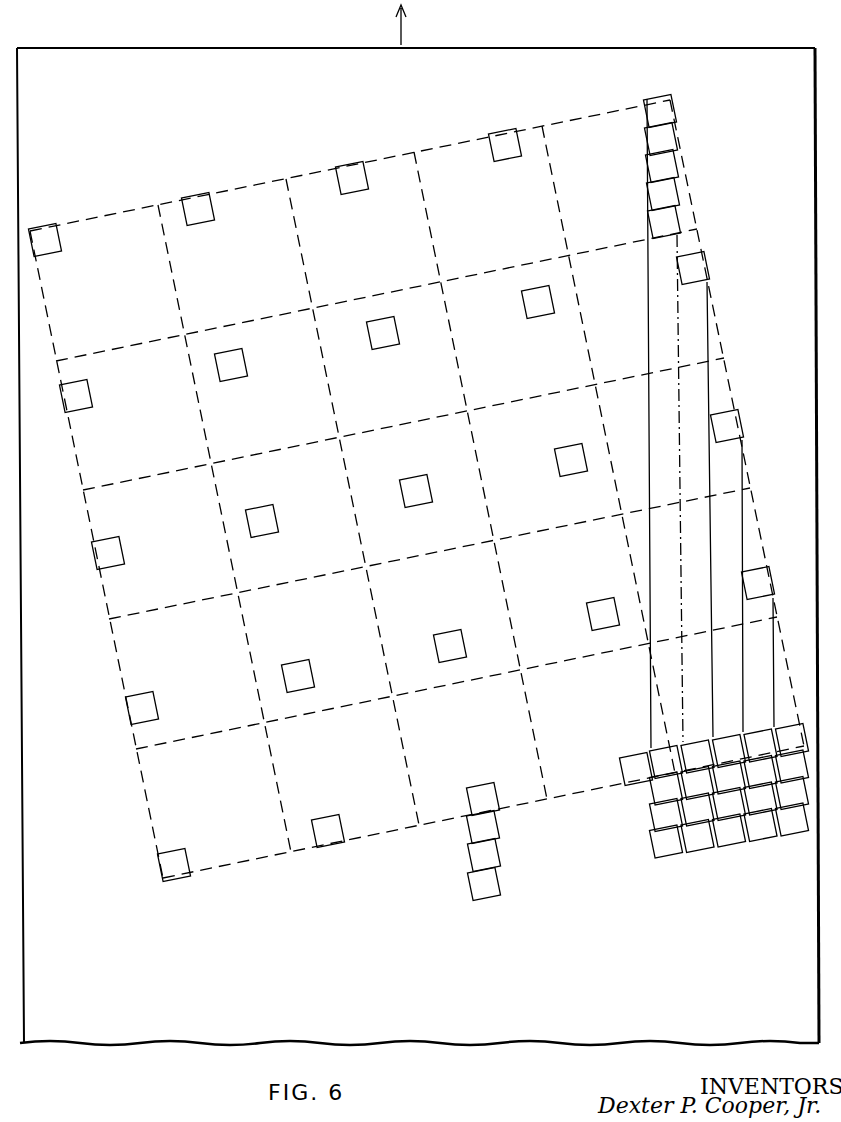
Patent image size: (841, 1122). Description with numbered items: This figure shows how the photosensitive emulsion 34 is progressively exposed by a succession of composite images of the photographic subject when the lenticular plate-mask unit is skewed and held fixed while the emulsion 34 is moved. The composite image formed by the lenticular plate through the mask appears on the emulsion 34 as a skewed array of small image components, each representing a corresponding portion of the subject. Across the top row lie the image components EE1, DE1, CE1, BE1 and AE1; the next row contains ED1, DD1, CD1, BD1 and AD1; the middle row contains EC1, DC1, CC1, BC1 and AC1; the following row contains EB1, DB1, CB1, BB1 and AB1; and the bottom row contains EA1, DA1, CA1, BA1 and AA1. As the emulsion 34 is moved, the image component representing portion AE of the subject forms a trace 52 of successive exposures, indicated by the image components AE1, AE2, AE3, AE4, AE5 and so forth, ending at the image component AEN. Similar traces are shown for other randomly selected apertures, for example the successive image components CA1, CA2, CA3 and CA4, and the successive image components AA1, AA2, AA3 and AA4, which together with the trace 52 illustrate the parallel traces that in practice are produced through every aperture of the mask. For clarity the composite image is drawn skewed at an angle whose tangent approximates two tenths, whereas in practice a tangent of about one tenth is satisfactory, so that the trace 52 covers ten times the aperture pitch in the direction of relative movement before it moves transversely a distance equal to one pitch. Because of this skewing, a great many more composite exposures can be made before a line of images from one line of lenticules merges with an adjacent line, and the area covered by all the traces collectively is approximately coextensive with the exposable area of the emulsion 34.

The trace of successive exposures 52 is at (650, 326).
The emulsion 34 is at (486, 1025).
The image component EE1 is at (50, 240).
The image component DE1 is at (203, 209).
The image component CE1 is at (357, 178).
The image component BE1 is at (515, 152).
The image component AE1 is at (665, 111).
The image component AE2 is at (663, 141).
The image component AE3 is at (668, 170).
The image component AE4 is at (662, 198).
The image component AE5 is at (668, 225).
The image component AD1 is at (698, 268).
The image component CD1 is at (388, 333).
The image component BD1 is at (540, 312).
The image component DD1 is at (236, 365).
The image component ED1 is at (81, 396).
The image component AC1 is at (732, 426).
The image component BC1 is at (572, 470).
The image component CC1 is at (421, 491).
The image component DC1 is at (267, 521).
The image component EC1 is at (113, 553).
The image component AB1 is at (763, 583).
The image component BB1 is at (600, 620).
The image component CB1 is at (458, 648).
The image component DB1 is at (303, 676).
The image component EB1 is at (147, 708).
The image component EA1 is at (176, 860).
The image component DA1 is at (330, 826).
The image component CA1 is at (476, 794).
The image component CA2 is at (484, 828).
The image component CA3 is at (480, 852).
The image component CA4 is at (490, 885).
The image component BA1 is at (632, 767).
The image component AA1 is at (795, 742).
The image component AA2 is at (790, 772).
The image component AA3 is at (793, 795).
The image component AA4 is at (793, 815).
The image component AEN is at (665, 841).